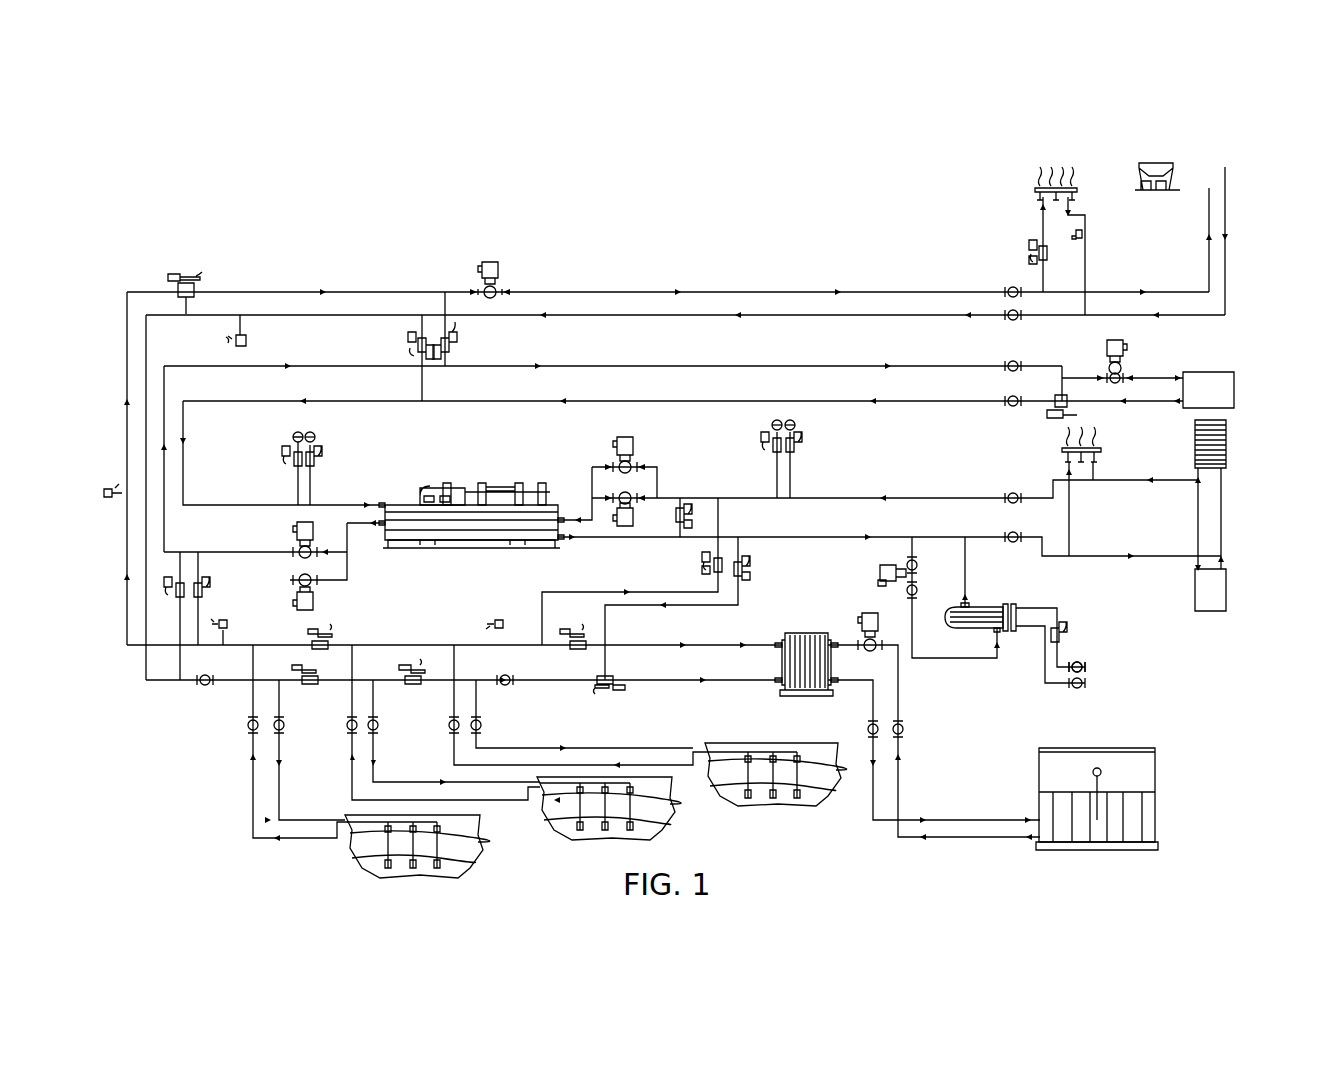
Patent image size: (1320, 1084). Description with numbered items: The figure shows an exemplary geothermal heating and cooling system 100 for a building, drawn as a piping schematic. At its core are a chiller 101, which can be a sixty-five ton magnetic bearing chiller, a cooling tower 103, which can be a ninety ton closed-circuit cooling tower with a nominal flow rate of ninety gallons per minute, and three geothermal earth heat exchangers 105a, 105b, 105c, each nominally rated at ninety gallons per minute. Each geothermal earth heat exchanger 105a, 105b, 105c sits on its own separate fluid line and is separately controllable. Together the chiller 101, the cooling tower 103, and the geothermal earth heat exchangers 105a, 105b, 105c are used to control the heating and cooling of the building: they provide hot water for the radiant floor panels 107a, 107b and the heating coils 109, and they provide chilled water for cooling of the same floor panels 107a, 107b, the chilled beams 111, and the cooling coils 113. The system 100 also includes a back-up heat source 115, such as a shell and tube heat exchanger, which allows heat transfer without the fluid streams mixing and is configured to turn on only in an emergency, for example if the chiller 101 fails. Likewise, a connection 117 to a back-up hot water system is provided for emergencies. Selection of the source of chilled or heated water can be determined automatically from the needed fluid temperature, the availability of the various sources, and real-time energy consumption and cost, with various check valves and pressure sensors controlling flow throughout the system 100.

The heating and cooling system 100 is at (506, 178).
The chiller 101 is at (487, 498).
The cooling tower 103 is at (1133, 773).
The geothermal earth heat exchanger 105a is at (407, 865).
The geothermal earth heat exchanger 105b is at (585, 832).
The geothermal earth heat exchanger 105c is at (787, 797).
The radiant floor panel 107a is at (1078, 189).
The radiant floor panel 107b is at (1077, 472).
The heating coils 109 is at (1218, 595).
The chilled beams 111 is at (1160, 170).
The cooling coils 113 is at (1222, 392).
The back-up heat source 115 is at (965, 622).
The connection to a back-up hot water system 117 is at (1087, 677).